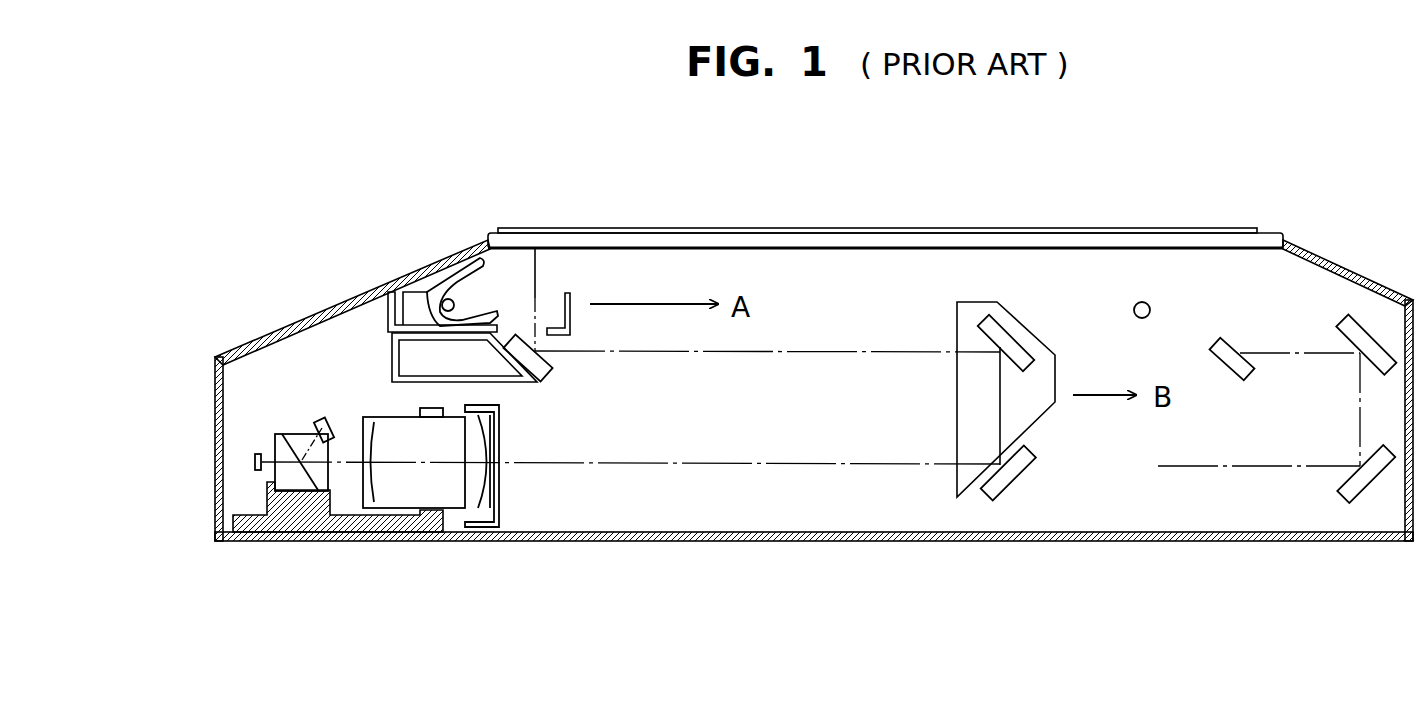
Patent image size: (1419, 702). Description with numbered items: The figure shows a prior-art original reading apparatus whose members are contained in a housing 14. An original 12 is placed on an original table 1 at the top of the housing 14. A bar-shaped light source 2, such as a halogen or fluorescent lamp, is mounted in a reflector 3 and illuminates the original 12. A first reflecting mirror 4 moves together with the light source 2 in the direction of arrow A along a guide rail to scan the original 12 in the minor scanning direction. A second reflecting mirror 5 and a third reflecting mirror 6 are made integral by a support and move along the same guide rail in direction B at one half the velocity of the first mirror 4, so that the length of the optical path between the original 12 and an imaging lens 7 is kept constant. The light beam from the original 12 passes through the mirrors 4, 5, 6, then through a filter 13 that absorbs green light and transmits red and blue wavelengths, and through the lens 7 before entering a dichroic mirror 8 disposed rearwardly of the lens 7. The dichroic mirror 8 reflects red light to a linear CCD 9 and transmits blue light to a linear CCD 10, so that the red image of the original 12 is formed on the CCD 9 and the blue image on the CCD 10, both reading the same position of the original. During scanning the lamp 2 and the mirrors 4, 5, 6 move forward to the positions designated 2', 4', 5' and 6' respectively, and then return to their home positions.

The original table 1 is at (728, 241).
The bar-shaped light source 2 is at (475, 291).
The forward position of the light source 2' is at (1165, 242).
The reflector 3 is at (470, 260).
The first reflecting mirror 4 is at (549, 379).
The forward position of the first reflecting mirror 4' is at (1232, 325).
The second reflecting mirror 5 is at (1013, 268).
The forward position of the second reflecting mirror 5' is at (1374, 297).
The third reflecting mirror 6 is at (1015, 534).
The forward position of the third reflecting mirror 6' is at (1366, 534).
The imaging lens 7 is at (462, 492).
The dichroic mirror 8 is at (297, 480).
The CCD 9 is at (325, 417).
The CCD 10 is at (254, 462).
The original 12 is at (850, 231).
The filter 13 is at (500, 493).
The housing 14 is at (717, 540).